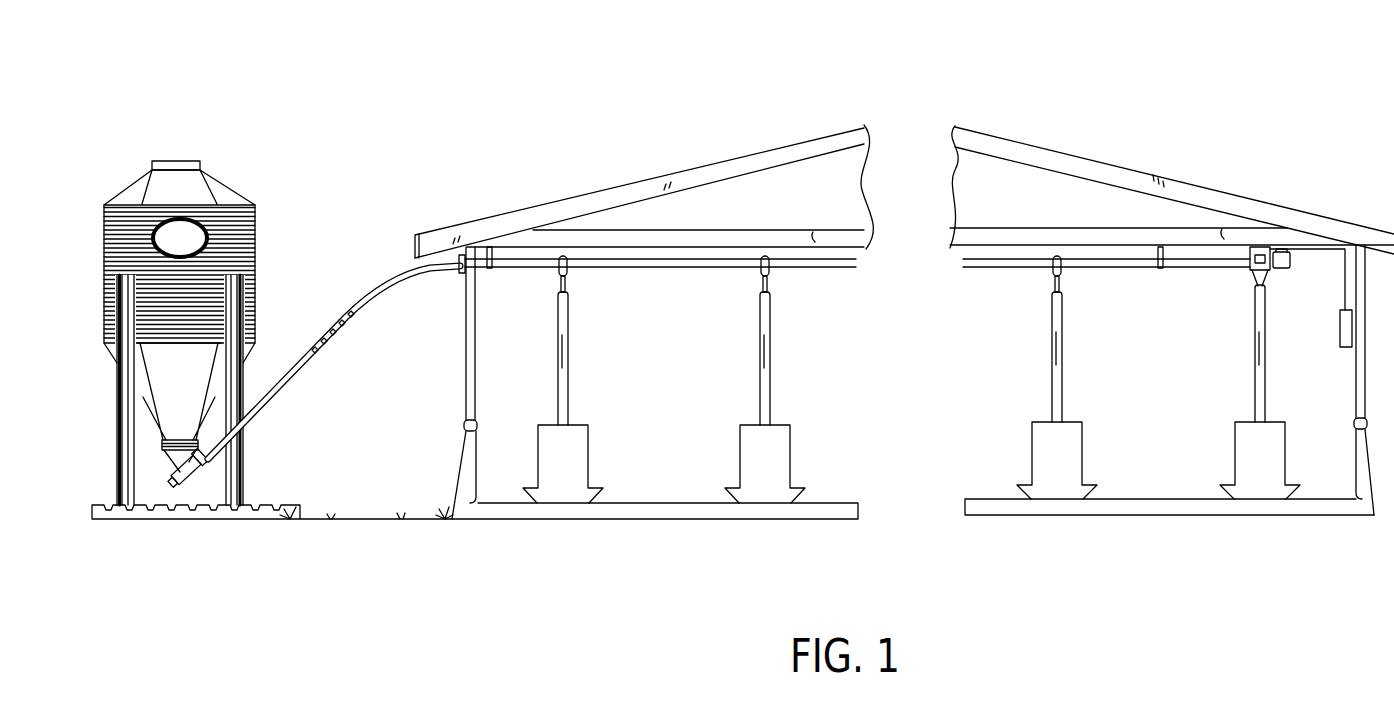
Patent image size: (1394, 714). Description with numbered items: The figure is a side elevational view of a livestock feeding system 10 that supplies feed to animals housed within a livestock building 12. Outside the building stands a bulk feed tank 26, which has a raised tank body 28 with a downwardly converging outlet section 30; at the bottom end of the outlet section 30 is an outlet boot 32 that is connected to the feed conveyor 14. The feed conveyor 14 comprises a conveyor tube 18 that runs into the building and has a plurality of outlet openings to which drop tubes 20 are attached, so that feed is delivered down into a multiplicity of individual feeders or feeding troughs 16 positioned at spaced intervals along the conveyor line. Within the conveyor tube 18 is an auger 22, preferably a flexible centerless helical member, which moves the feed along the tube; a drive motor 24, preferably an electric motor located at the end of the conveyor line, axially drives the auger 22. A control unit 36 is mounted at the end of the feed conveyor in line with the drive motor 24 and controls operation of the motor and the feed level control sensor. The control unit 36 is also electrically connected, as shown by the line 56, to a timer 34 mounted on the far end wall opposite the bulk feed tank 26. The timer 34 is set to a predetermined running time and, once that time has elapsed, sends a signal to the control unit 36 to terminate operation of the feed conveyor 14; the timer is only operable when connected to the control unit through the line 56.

The livestock feeding system 10 is at (941, 70).
The livestock building 12 is at (1178, 182).
The feed conveyor 14 is at (383, 283).
The feeders 16 is at (541, 425).
The conveyor tube 18 is at (848, 268).
The drop tubes 20 is at (569, 300).
The auger 22 is at (323, 338).
The drive motor 24 is at (1283, 270).
The bulk feed tank 26 is at (229, 189).
The tank body 28 is at (257, 248).
The outlet section 30 is at (197, 389).
The outlet boot 32 is at (167, 467).
The timer 34 is at (1340, 329).
The control unit 36 is at (1250, 265).
The line 56 is at (1345, 286).